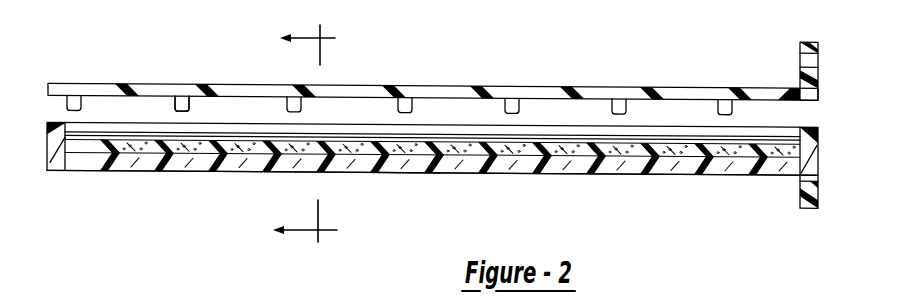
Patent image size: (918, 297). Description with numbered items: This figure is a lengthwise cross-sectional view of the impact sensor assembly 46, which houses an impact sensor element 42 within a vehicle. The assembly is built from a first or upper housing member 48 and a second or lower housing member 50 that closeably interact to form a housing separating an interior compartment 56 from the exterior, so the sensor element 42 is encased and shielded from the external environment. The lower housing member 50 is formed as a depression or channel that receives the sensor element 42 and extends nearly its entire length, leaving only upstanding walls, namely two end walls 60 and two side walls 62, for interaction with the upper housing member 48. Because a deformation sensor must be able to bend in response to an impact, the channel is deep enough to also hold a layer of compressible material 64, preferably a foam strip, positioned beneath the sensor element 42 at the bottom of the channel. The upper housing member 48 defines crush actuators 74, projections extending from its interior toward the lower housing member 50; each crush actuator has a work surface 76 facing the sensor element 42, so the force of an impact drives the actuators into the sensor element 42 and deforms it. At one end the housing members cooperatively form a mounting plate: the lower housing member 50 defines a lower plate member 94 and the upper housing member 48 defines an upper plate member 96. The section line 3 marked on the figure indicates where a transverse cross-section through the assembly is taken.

The impact sensor element 42 is at (743, 145).
The impact sensor assembly 46 is at (830, 97).
The upper housing member 48 is at (533, 85).
The lower housing member 50 is at (590, 173).
The interior compartment 56 is at (163, 108).
The end walls 60 is at (47, 140).
The side walls 62 is at (270, 133).
The compressible material 64 is at (389, 160).
The crush actuators 74 is at (512, 100).
The work surface 76 is at (614, 102).
The lower plate member 94 is at (818, 64).
The upper plate member 96 is at (818, 153).
The section line 3- 3 is at (292, 138).